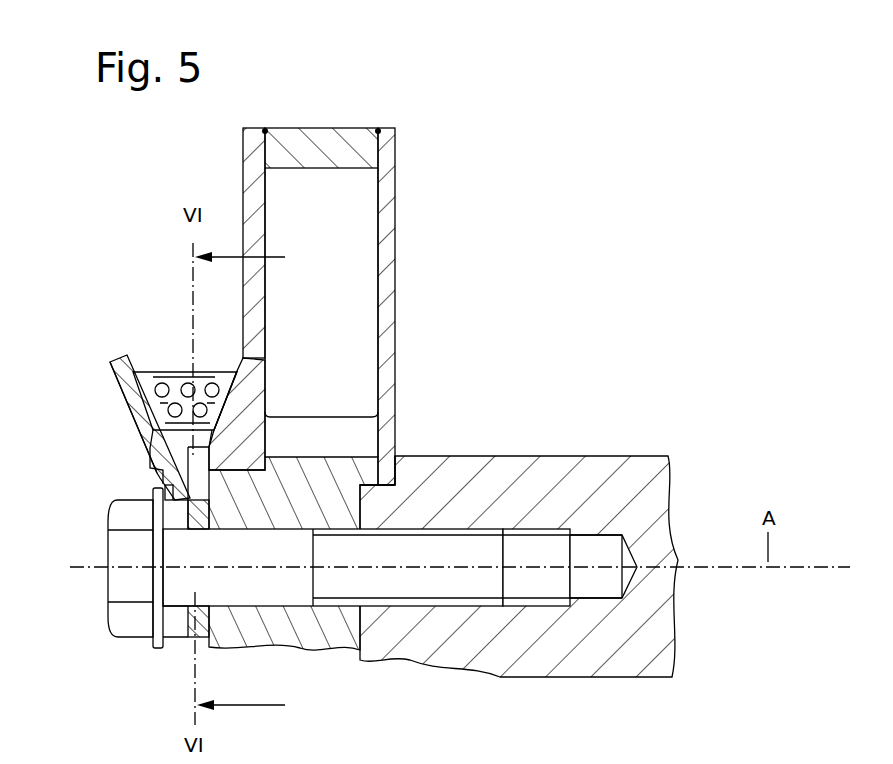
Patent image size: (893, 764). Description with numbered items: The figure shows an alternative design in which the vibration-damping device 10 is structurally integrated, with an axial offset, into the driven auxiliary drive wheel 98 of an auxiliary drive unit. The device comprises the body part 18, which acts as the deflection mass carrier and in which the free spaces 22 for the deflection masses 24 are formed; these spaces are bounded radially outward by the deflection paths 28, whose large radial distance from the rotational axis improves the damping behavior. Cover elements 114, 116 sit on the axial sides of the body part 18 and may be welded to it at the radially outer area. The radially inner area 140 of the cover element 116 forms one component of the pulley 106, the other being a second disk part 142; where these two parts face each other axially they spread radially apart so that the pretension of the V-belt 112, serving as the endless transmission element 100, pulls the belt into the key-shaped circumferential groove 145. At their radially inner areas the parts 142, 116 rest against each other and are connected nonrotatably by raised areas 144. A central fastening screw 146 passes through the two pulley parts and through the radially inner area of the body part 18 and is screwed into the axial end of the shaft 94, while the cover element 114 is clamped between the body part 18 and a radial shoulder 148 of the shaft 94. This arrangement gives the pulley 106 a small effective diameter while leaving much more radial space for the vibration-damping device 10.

The vibration-damping device 10 is at (351, 300).
The body part 18 is at (380, 500).
The free spaces 22 is at (310, 443).
The deflection masses 24 is at (368, 312).
The deflection paths 28 is at (330, 175).
The shaft 94 is at (578, 455).
The auxiliary drive wheel 98 is at (117, 415).
The endless transmission element 100 is at (106, 395).
The pulley 106 is at (90, 362).
The V-belt 112 is at (165, 375).
The cover element 114 is at (395, 252).
The cover element 116 is at (243, 150).
The radially inner area 140 is at (332, 413).
The second disk part 142 is at (165, 421).
The raised areas 144 is at (150, 530).
The key-shaped circumferential groove 145 is at (182, 440).
The central fastening screw 146 is at (118, 625).
The radial shoulder 148 is at (397, 475).